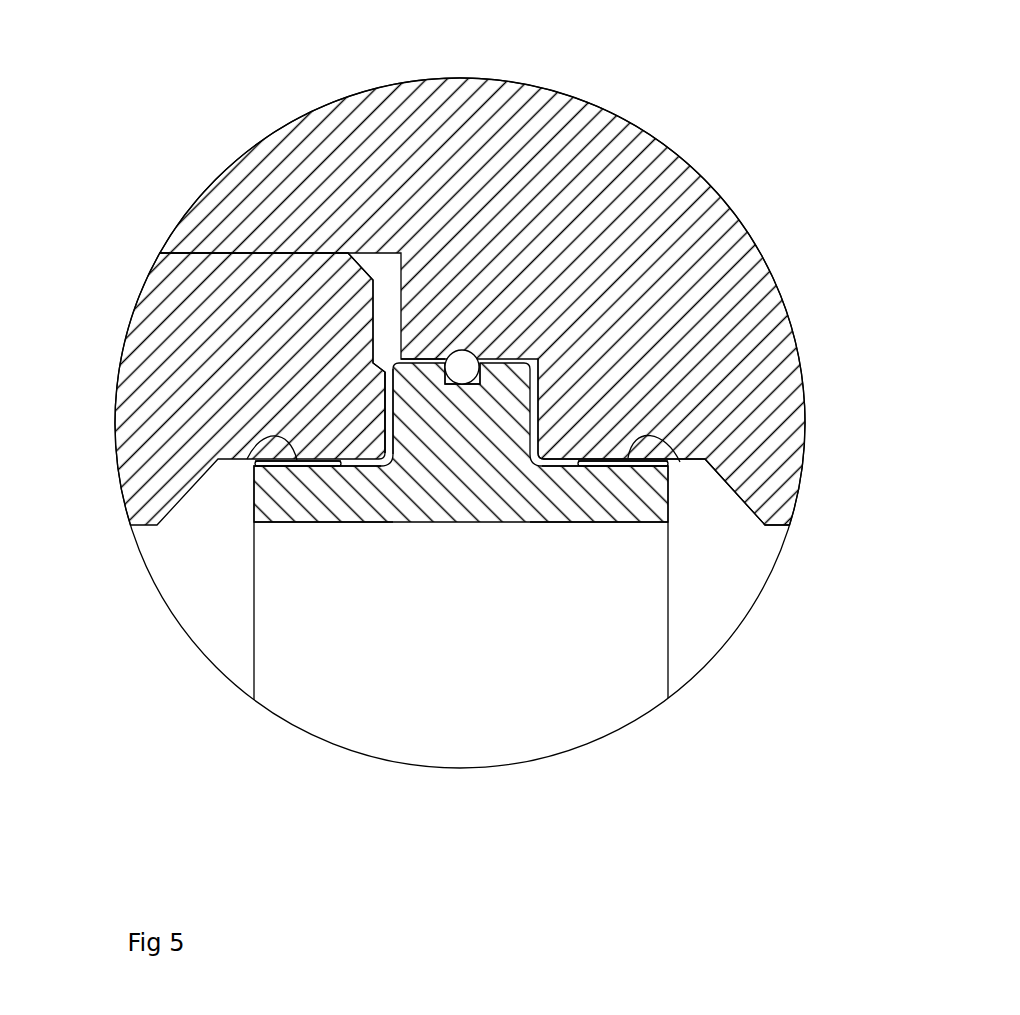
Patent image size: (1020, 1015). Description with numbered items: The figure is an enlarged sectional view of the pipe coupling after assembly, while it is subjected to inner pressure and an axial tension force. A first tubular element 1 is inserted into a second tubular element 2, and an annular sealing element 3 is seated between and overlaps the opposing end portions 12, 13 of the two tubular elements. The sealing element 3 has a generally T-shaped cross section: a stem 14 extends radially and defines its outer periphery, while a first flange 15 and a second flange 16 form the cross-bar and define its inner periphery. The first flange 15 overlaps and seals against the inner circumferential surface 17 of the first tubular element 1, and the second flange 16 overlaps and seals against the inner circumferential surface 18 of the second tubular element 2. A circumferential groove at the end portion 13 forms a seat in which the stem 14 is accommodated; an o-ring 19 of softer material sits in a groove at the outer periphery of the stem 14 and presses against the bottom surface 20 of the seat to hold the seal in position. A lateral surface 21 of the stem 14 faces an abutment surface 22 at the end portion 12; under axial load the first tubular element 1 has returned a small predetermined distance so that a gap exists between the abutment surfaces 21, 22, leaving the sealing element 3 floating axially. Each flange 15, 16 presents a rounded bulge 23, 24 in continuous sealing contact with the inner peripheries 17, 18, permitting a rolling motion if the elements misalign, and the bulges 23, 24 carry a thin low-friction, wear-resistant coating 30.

The first tubular element 1 is at (130, 293).
The second tubular element 2 is at (710, 172).
The annular sealing element 3 is at (472, 528).
The end portion of the first tubular element 12 is at (283, 380).
The end portion of the second tubular element 13 is at (610, 382).
The stem of the T-shaped cross section 14 is at (497, 367).
The first flange 15 is at (330, 500).
The second flange 16 is at (600, 500).
The inner circumferential surface of the first tubular element 17 is at (247, 459).
The inner circumferential surface of the second tubular element 18 is at (680, 462).
The o-ring 19 is at (463, 363).
The bottom surface of the groove 20 is at (438, 361).
The lateral surface of the first portion 21 is at (388, 464).
The abutment surface 22 is at (380, 403).
The rounded bulge of the first flange 23 is at (297, 463).
The rounded bulge of the second flange 24 is at (615, 462).
The coating 30 is at (253, 467).